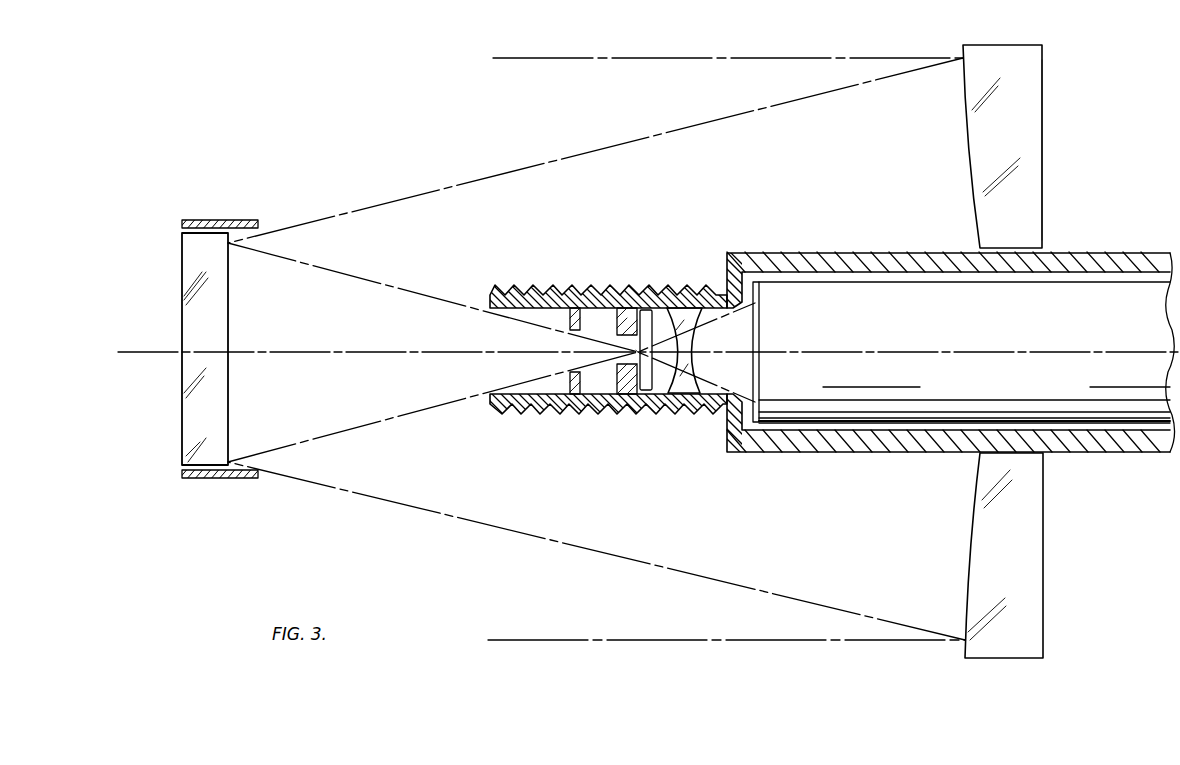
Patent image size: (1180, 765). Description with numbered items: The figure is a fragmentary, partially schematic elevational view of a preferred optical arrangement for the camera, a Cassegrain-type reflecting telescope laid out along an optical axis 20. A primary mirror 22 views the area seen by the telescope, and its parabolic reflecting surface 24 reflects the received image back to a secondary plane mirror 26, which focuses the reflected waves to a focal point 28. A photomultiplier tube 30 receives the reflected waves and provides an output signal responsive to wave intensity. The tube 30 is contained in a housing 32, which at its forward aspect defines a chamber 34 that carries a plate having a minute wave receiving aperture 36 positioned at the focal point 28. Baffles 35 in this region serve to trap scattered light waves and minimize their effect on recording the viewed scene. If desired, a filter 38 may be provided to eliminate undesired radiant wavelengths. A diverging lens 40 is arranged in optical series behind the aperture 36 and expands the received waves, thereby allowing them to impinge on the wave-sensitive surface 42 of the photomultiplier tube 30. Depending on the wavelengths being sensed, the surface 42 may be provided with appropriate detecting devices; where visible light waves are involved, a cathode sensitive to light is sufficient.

The optical axis 20 is at (138, 349).
The primary mirror 22 is at (1028, 100).
The parabolic reflecting surface 24 is at (1005, 145).
The secondary plane mirror 26 is at (190, 412).
The focal point 28 is at (636, 352).
The photomultiplier tube 30 is at (992, 330).
The housing 32 is at (860, 252).
The chamber 34 is at (512, 306).
The baffles 35 is at (617, 310).
The wave receiving aperture 36 is at (618, 384).
The filter 38 is at (652, 312).
The diverging lens 40 is at (680, 380).
The wave-sensitive surface 42 is at (757, 336).